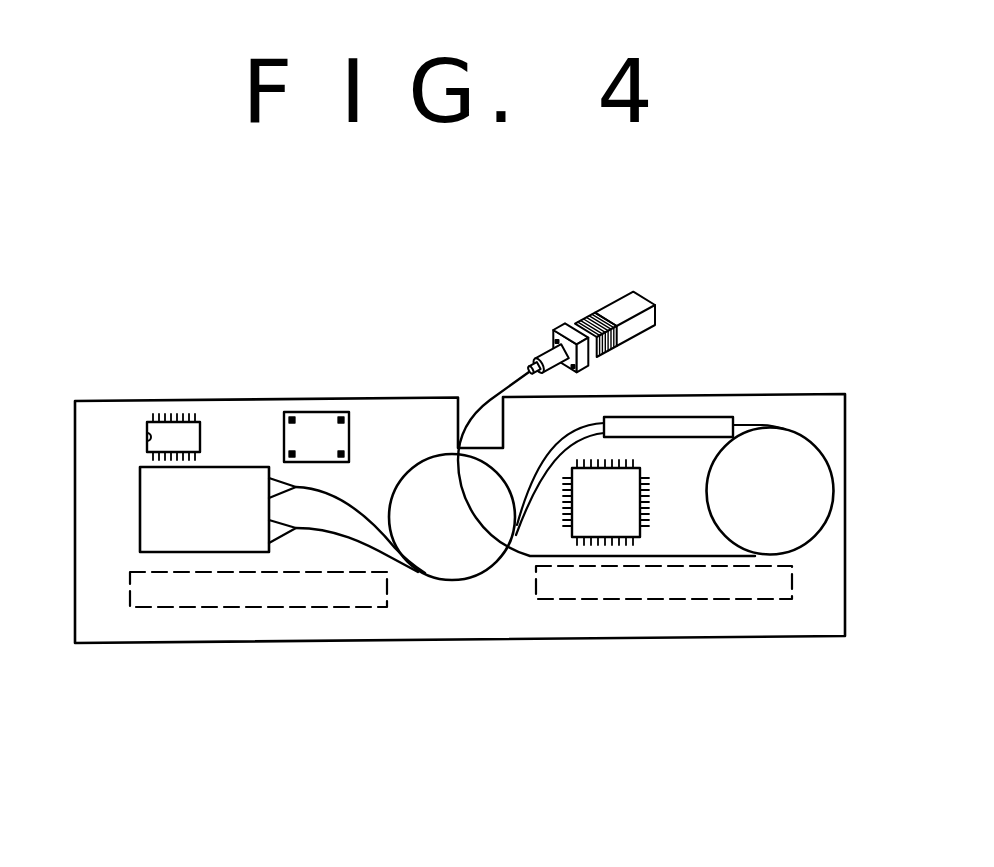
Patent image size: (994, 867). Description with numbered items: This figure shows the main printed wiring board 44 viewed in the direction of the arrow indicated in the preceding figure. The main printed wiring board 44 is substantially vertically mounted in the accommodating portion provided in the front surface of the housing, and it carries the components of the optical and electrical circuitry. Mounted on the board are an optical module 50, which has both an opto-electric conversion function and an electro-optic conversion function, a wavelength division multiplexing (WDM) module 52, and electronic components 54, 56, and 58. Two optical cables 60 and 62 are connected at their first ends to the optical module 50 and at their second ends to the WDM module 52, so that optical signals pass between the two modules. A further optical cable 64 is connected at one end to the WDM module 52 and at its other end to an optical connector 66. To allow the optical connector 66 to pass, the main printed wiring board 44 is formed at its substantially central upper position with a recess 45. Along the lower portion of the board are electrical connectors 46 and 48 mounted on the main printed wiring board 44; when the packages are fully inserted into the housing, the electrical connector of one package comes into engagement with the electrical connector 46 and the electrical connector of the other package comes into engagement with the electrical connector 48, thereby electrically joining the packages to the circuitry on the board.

The main printed wiring board 44 is at (815, 402).
The recess 45 is at (470, 400).
The electrical connector 46 is at (677, 597).
The electrical connector 48 is at (240, 607).
The optical module 50 is at (185, 543).
The wavelength division multiplexing (WDM) module 52 is at (712, 423).
The electronic component 54 is at (605, 527).
The electronic component 56 is at (315, 420).
The electronic component 58 is at (173, 427).
The optical cable 60 is at (326, 530).
The optical cable 62 is at (363, 518).
The optical cable 64 is at (798, 548).
The optical connector 66 is at (625, 300).